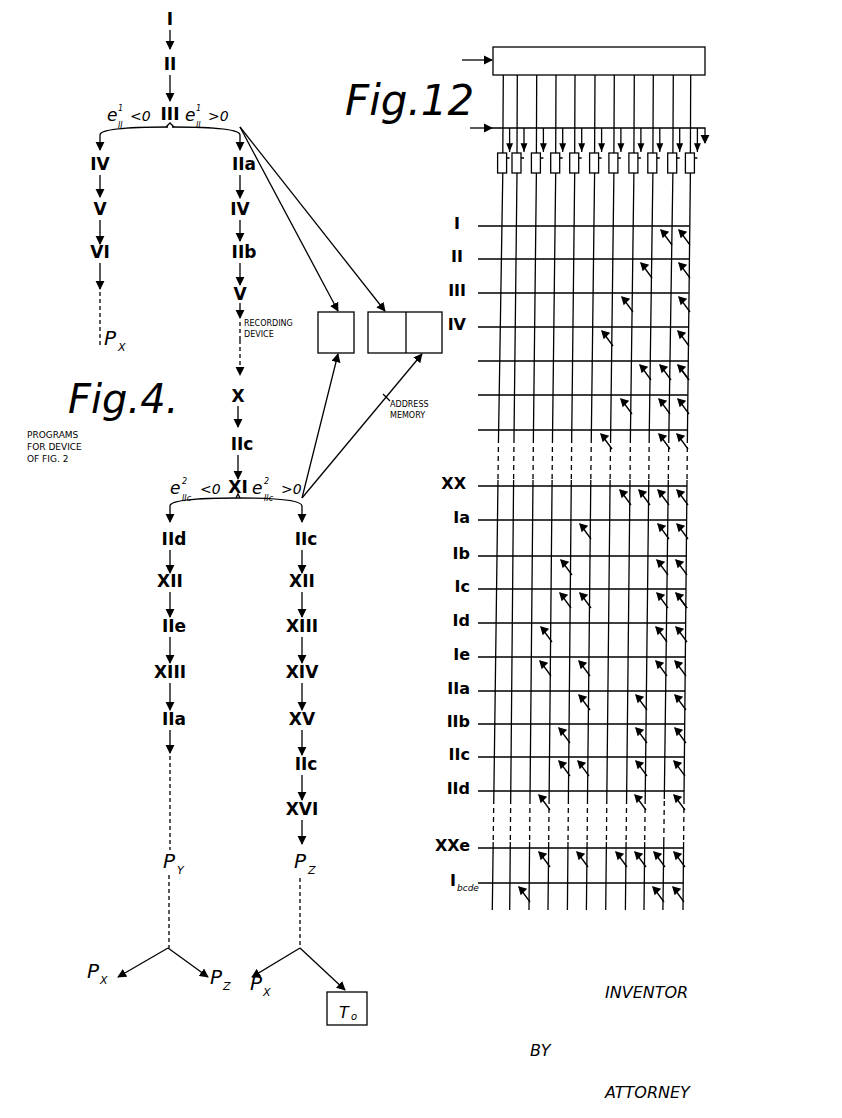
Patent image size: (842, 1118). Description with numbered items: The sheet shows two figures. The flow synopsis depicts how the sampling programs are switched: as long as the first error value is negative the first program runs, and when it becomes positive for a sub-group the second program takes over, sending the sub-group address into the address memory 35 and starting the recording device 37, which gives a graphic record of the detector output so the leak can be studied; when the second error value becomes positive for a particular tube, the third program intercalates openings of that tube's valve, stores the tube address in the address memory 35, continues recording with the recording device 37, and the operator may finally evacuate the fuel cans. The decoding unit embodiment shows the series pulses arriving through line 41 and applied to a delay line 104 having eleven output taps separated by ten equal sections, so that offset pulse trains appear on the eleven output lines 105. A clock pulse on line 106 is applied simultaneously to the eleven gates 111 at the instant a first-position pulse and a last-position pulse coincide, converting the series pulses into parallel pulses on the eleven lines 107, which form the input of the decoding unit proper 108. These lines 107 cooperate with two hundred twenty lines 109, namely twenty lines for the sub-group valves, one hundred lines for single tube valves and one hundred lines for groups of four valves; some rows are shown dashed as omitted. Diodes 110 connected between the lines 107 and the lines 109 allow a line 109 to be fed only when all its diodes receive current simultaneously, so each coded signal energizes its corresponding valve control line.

In FIG. 4, the address memory 35 is at (432, 313).
In FIG. 4, the recording device 37 is at (336, 332).
In FIG. 12, the line 41 is at (468, 57).
In FIG. 12, the delay line 104 is at (631, 47).
In FIG. 12, the output lines 105 is at (703, 101).
In FIG. 12, the clock pulse line 106 is at (495, 129).
In FIG. 12, the parallel output lines 107 is at (700, 210).
In FIG. 12, the decoding unit proper 108 is at (691, 370).
In FIG. 12, the valve control lines 109 is at (485, 485).
In FIG. 12, the diodes 110 is at (675, 598).
In FIG. 12, the gates 111 is at (694, 174).